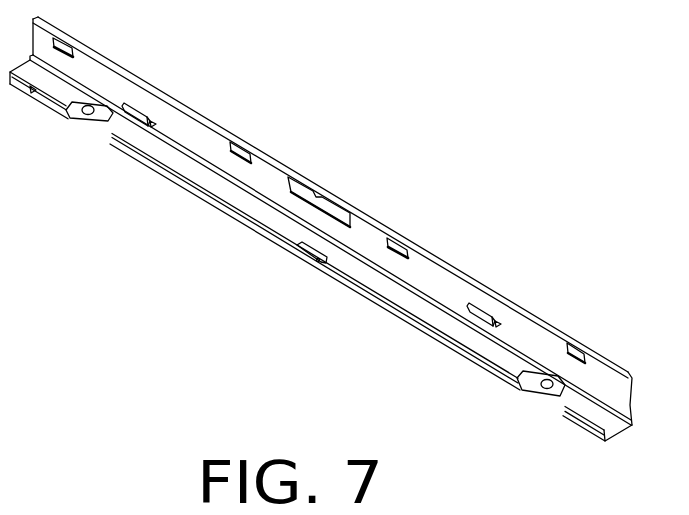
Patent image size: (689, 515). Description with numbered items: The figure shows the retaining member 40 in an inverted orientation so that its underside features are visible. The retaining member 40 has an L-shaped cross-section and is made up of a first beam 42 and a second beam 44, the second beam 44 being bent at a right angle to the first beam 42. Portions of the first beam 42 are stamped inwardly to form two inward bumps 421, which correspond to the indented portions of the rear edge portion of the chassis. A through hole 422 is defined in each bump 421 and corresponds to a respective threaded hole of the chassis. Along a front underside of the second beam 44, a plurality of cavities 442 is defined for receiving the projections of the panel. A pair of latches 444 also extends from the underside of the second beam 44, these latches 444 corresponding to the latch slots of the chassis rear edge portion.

The retaining member 40 is at (306, 154).
The first beam 42 is at (613, 420).
The inward bump 421 is at (518, 378).
The through hole 422 is at (537, 388).
The second beam 44 is at (547, 340).
The cavity 442 is at (403, 238).
The latch 444 is at (490, 312).